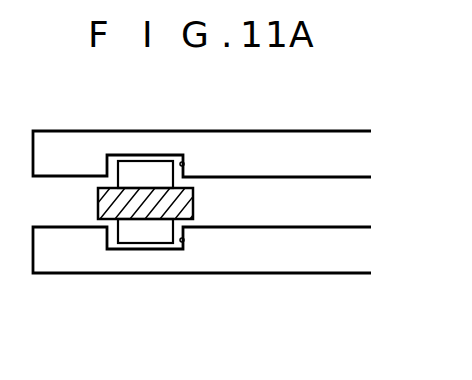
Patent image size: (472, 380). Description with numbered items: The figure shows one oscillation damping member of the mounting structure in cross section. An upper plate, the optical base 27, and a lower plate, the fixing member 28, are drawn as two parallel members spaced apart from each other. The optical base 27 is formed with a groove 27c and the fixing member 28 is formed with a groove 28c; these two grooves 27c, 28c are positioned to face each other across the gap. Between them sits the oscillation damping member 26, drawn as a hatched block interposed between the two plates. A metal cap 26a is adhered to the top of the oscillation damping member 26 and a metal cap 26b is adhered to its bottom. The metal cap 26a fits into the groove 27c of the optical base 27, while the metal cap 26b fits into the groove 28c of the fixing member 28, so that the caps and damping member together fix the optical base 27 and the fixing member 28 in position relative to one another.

The optical base 27 is at (70, 137).
The fixing member 28 is at (73, 262).
The oscillation damping member 26 is at (189, 202).
The metal cap 26a is at (148, 170).
The metal cap 26b is at (148, 238).
The groove 27c is at (184, 164).
The groove 28c is at (184, 241).